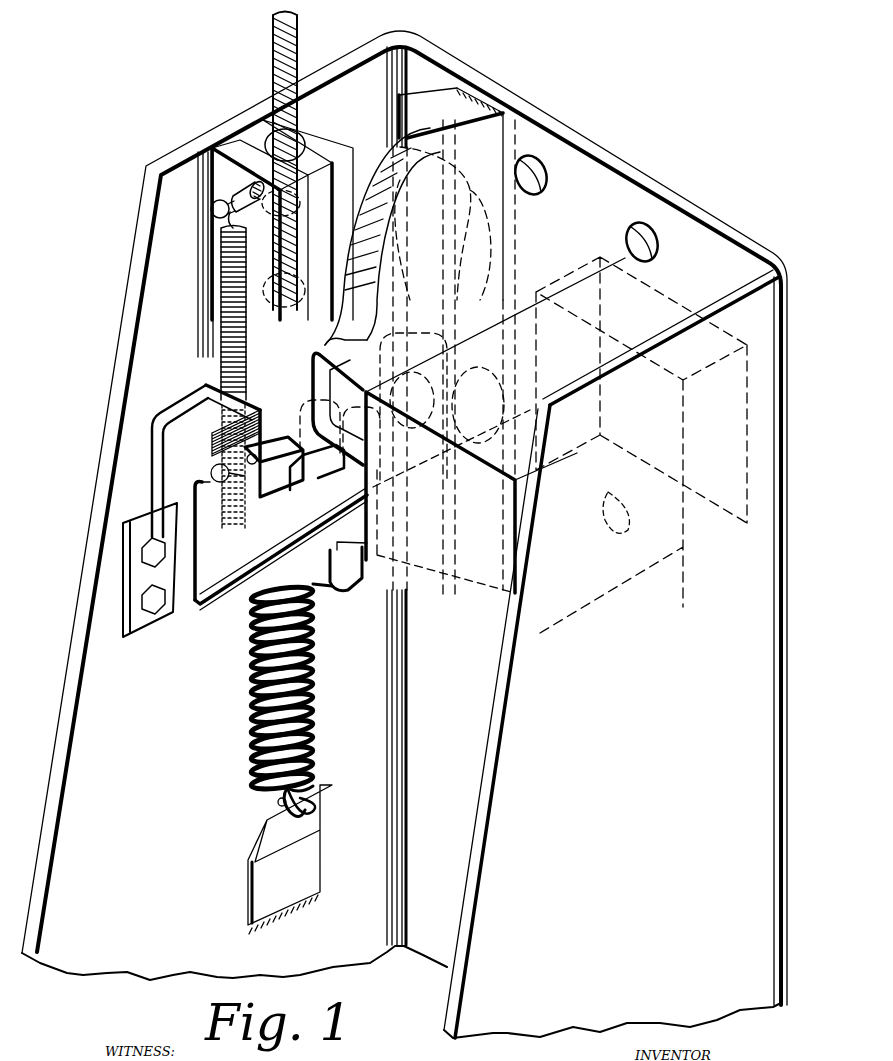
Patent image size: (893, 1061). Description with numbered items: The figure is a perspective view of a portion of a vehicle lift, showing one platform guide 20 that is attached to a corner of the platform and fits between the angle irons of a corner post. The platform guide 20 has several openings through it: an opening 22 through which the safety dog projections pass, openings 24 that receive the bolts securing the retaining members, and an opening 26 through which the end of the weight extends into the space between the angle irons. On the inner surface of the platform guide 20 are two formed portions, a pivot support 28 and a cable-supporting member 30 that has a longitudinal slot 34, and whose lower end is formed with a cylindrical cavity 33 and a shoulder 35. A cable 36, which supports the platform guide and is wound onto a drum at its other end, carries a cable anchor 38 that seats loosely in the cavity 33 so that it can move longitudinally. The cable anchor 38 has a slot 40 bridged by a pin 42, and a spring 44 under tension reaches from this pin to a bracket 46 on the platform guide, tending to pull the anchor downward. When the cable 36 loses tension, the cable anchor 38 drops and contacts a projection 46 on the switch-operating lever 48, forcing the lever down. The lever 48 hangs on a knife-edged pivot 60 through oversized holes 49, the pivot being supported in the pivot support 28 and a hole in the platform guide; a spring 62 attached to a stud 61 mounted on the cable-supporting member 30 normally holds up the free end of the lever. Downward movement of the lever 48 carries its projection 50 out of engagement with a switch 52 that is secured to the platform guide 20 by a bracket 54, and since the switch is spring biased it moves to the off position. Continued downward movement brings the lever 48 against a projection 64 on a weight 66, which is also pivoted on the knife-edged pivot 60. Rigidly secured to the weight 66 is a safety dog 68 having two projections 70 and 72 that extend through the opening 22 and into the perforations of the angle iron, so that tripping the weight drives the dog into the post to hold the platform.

The platform guide 20 is at (160, 303).
The opening 22 is at (417, 120).
The openings 24 is at (650, 240).
The opening 26 is at (538, 303).
The pivot support 28 is at (483, 123).
The cable-supporting member 30 is at (257, 143).
The cylindrical cavity 33 is at (278, 272).
The longitudinal slot 34 is at (322, 163).
The shoulder 35 is at (243, 183).
The cable 36 is at (283, 62).
The cable anchor 38 is at (280, 400).
The slot 40 is at (260, 417).
The pin 42 is at (247, 447).
The spring 44 is at (248, 688).
The bracket / projection 46 is at (300, 495).
The switch-operating lever 48 is at (197, 592).
The holes 49 is at (470, 413).
The projection 50 is at (193, 487).
The switch 52 is at (212, 470).
The bracket 54 is at (123, 560).
The knife-edged pivot 60 is at (620, 522).
The stud 61 is at (210, 210).
The spring 62 is at (222, 260).
The projection 64 is at (340, 590).
The weight 66 is at (558, 612).
The safety dog 68 is at (383, 157).
The projection 70 is at (450, 222).
The projection 72 is at (480, 505).